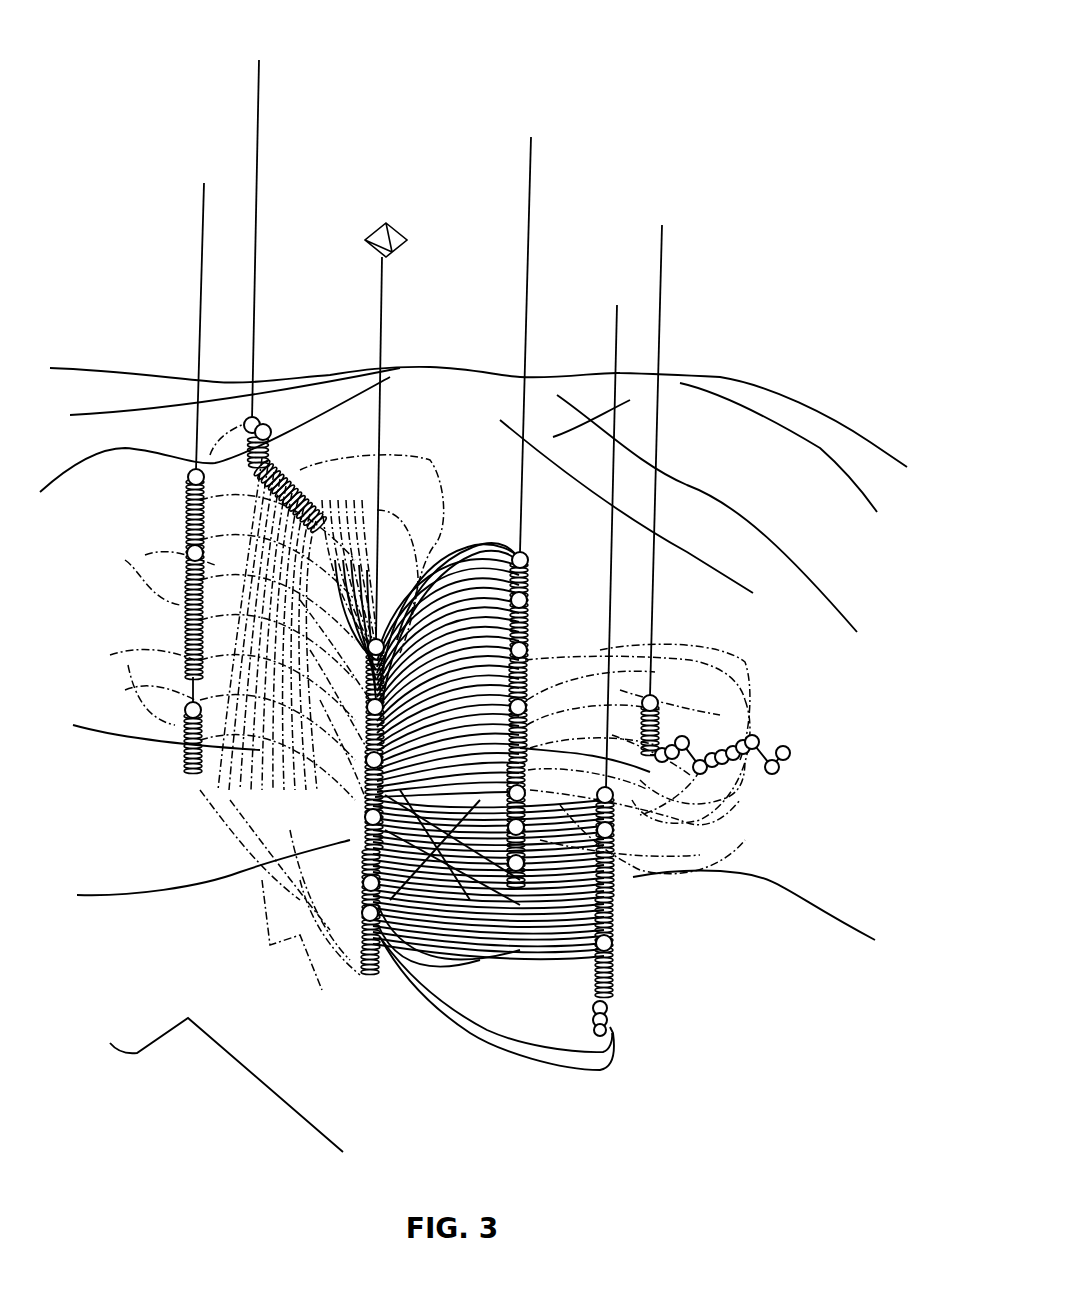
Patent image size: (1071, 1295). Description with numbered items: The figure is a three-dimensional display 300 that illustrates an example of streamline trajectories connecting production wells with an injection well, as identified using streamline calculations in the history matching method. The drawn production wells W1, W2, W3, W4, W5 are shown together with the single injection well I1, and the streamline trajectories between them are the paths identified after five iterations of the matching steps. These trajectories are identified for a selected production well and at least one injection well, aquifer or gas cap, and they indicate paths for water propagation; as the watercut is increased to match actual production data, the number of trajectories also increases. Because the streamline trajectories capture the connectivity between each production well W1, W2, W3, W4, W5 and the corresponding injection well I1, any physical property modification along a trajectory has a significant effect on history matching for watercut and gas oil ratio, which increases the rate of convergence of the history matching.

The three-dimensional display 300 is at (758, 46).
The production well W1 is at (204, 459).
The production well W2 is at (615, 653).
The production well W3 is at (285, 275).
The production well W4 is at (529, 485).
The production well W5 is at (715, 474).
The injection well I1 is at (384, 580).